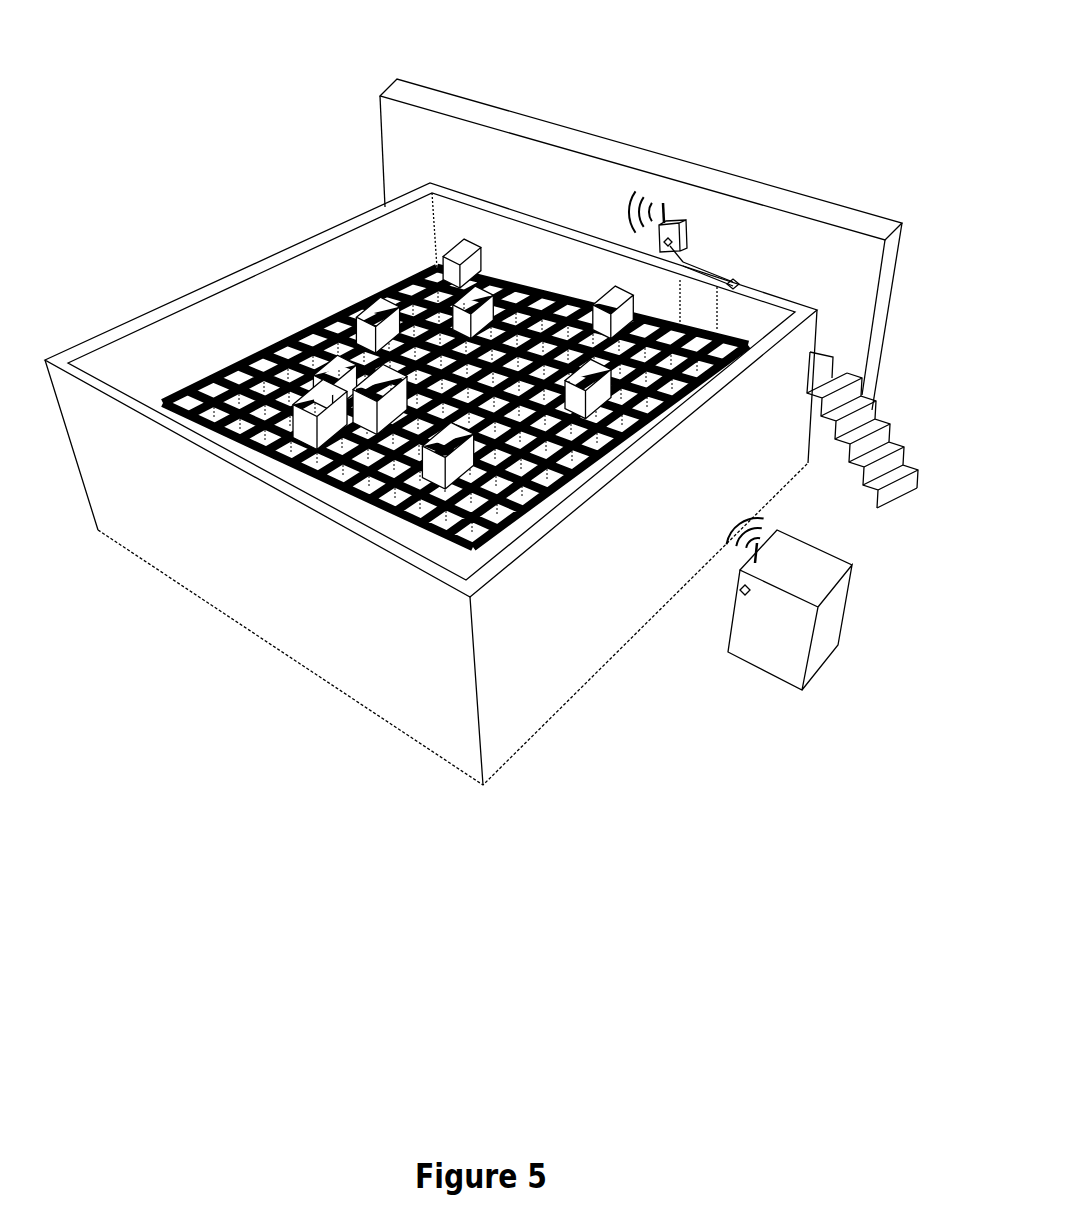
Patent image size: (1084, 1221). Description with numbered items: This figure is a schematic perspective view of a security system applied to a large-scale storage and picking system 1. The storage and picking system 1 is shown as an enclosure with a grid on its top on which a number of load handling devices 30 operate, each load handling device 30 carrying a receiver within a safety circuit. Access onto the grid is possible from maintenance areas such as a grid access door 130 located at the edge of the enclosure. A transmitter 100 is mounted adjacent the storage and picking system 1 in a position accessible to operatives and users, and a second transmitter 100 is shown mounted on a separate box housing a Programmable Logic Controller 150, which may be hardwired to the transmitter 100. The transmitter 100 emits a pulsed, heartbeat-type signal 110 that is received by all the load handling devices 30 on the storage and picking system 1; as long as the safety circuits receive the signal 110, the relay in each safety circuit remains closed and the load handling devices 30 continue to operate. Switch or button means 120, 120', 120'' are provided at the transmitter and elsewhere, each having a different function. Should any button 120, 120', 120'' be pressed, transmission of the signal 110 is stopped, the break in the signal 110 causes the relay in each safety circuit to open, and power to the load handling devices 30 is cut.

The storage and picking system 1 is at (247, 535).
The load handling device 30 is at (373, 313).
The signal 110 is at (618, 207).
The transmitter 100 is at (673, 217).
The switch or button means 120 is at (776, 196).
The grid access door 130 is at (700, 278).
The switch or button means 120' is at (845, 238).
The switch or button means 120'' is at (846, 656).
The Programmable Logic Controller 150 is at (790, 655).